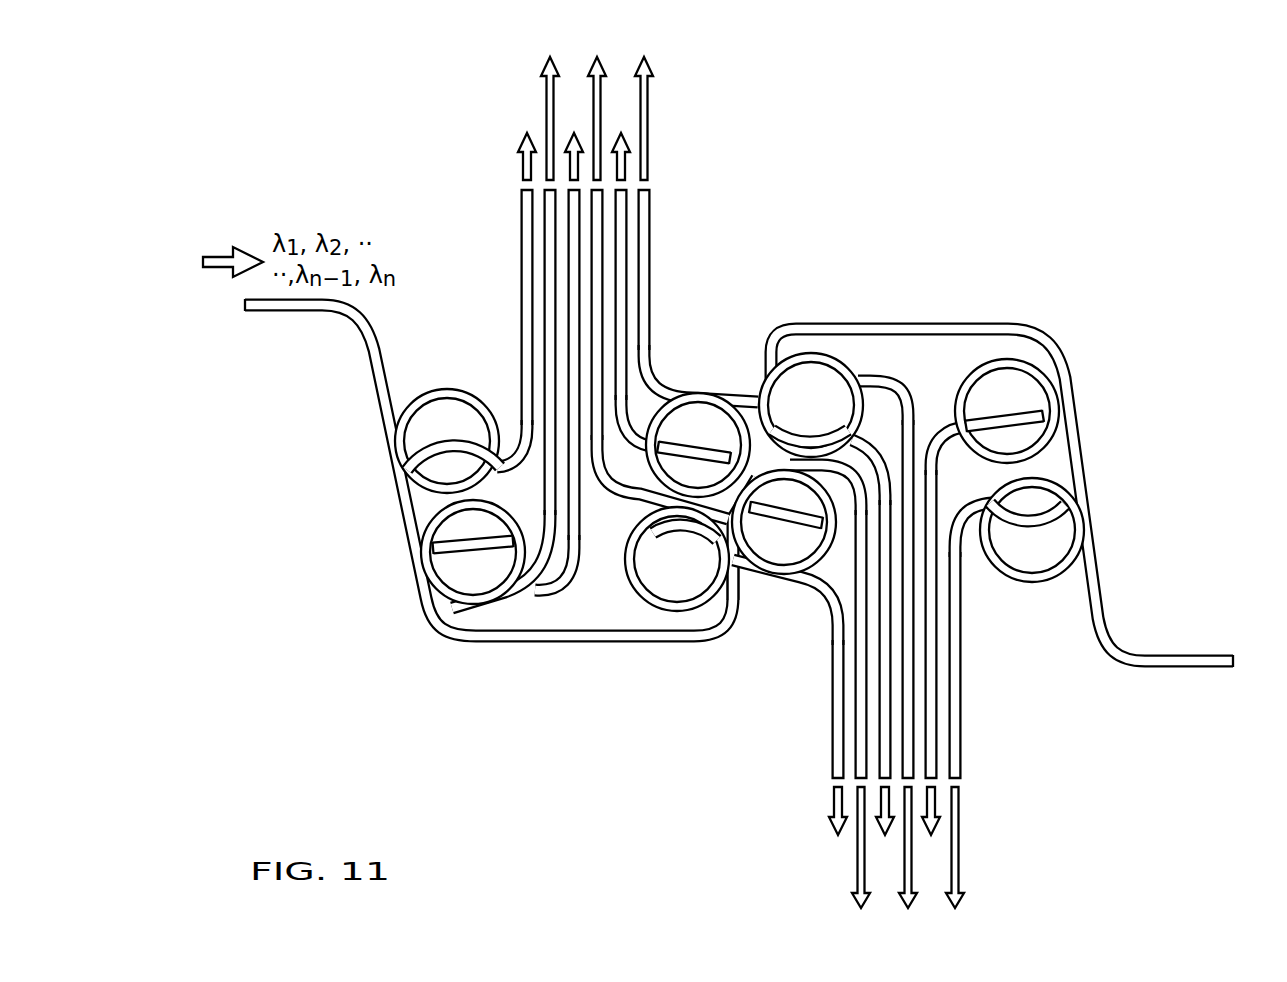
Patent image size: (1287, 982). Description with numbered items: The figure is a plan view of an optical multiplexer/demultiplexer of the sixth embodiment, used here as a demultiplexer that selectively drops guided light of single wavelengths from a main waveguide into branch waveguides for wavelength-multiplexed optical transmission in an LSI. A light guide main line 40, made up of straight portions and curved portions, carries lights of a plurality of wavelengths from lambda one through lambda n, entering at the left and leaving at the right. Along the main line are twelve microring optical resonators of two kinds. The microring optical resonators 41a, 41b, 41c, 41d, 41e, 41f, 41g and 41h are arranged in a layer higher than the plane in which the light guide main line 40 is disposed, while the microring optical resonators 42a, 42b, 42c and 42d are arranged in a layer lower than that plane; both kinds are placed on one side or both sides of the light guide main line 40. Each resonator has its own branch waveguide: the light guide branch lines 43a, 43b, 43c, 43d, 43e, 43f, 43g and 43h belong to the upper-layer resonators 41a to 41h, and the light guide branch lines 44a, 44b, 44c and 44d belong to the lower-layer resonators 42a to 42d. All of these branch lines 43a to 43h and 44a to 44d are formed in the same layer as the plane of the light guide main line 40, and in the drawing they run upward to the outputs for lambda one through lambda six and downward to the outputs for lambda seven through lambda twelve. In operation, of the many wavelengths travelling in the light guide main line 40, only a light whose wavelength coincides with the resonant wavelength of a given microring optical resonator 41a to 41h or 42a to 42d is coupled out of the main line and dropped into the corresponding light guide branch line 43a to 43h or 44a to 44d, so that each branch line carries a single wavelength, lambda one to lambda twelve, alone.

The light guide main line 40 is at (1237, 664).
The microring optical resonator 41a is at (478, 427).
The microring optical resonator 41b is at (509, 559).
The microring optical resonator 41c is at (640, 572).
The microring optical resonator 41d is at (745, 540).
The microring optical resonator 41e is at (730, 425).
The microring optical resonator 41f is at (841, 390).
The microring optical resonator 41g is at (970, 408).
The microring optical resonator 41h is at (997, 542).
The microring optical resonator 42a is at (533, 522).
The microring optical resonator 42b is at (615, 480).
The microring optical resonator 42c is at (845, 487).
The microring optical resonator 42d is at (1023, 503).
The light guide branch line 43a is at (540, 280).
The light guide branch line 43b is at (567, 302).
The light guide branch line 43c is at (605, 350).
The light guide branch line 43d is at (920, 707).
The light guide branch line 43e is at (653, 368).
The light guide branch line 43f is at (845, 590).
The light guide branch line 43g is at (858, 628).
The light guide branch line 43h is at (947, 733).
The light guide branch line 44a is at (557, 343).
The light guide branch line 44b is at (628, 268).
The light guide branch line 44c is at (900, 635).
The light guide branch line 44d is at (940, 730).